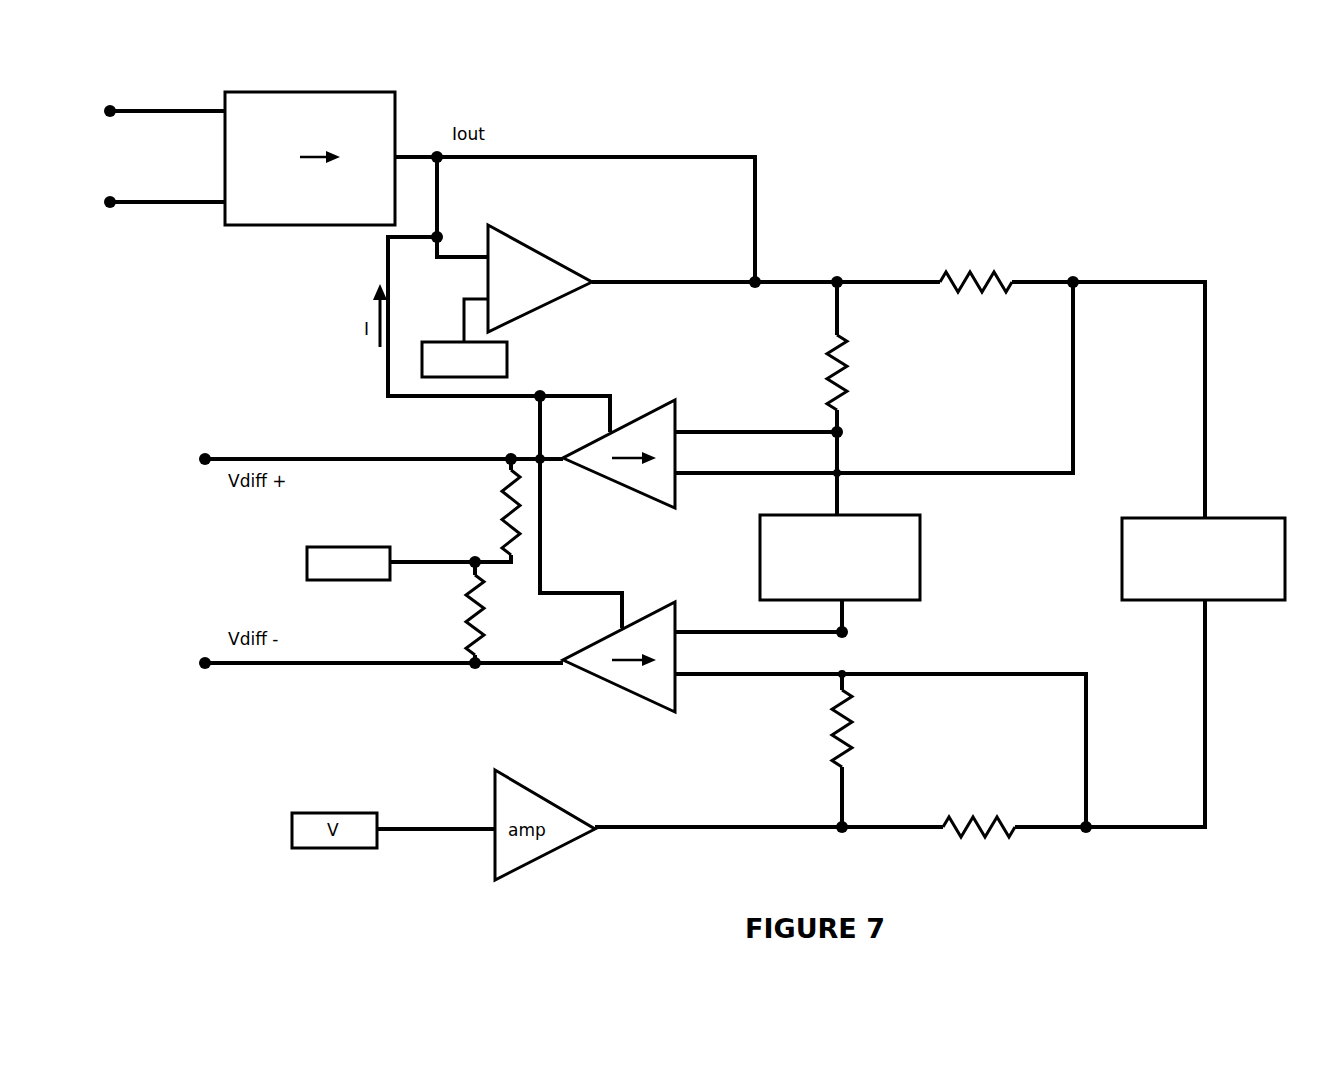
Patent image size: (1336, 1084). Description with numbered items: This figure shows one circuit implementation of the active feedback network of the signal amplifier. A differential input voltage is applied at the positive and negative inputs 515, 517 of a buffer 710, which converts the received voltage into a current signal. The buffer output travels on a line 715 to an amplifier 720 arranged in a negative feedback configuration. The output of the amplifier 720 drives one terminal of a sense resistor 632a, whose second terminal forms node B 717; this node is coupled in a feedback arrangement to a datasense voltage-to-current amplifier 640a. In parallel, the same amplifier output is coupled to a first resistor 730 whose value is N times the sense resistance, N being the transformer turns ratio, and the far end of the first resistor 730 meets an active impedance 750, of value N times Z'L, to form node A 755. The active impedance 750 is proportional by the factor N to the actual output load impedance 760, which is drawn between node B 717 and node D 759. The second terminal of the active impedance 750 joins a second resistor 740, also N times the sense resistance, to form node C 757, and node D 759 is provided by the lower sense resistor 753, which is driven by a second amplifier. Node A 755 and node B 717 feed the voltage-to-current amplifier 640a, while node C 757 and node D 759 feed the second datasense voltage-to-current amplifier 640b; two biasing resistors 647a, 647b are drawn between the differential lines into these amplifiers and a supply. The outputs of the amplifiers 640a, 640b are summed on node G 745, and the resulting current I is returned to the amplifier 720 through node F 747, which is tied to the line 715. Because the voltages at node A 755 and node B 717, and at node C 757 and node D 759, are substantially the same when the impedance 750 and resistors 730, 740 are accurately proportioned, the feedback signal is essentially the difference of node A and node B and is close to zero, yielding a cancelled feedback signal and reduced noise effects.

The positive differential input 515 is at (133, 113).
The negative differential input 517 is at (128, 205).
The buffer 710 is at (312, 226).
The line 715 is at (640, 155).
The amplifier 720 is at (540, 240).
The node F 747 is at (433, 242).
The node G 745 is at (530, 398).
The sense resistor 632a is at (955, 292).
The node B 717 is at (1078, 290).
The first resistor 730 is at (826, 380).
The node A 755 is at (843, 437).
The datasense voltage-to-current amplifier 640a is at (640, 412).
The resistor 647a is at (495, 520).
The resistor 647b is at (465, 592).
The datasense voltage-to-current amplifier 640b is at (637, 695).
The node C 757 is at (838, 636).
The node D 759 is at (1088, 818).
The active impedance 750 is at (920, 578).
The second resistor 740 is at (828, 738).
The sense resistor Rs 753 is at (973, 818).
The output impedance load 760 is at (1183, 518).